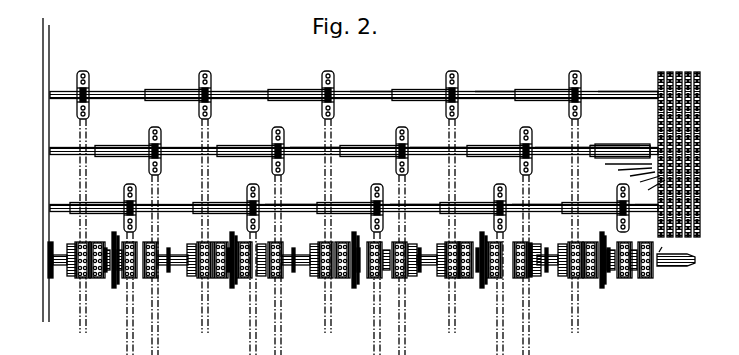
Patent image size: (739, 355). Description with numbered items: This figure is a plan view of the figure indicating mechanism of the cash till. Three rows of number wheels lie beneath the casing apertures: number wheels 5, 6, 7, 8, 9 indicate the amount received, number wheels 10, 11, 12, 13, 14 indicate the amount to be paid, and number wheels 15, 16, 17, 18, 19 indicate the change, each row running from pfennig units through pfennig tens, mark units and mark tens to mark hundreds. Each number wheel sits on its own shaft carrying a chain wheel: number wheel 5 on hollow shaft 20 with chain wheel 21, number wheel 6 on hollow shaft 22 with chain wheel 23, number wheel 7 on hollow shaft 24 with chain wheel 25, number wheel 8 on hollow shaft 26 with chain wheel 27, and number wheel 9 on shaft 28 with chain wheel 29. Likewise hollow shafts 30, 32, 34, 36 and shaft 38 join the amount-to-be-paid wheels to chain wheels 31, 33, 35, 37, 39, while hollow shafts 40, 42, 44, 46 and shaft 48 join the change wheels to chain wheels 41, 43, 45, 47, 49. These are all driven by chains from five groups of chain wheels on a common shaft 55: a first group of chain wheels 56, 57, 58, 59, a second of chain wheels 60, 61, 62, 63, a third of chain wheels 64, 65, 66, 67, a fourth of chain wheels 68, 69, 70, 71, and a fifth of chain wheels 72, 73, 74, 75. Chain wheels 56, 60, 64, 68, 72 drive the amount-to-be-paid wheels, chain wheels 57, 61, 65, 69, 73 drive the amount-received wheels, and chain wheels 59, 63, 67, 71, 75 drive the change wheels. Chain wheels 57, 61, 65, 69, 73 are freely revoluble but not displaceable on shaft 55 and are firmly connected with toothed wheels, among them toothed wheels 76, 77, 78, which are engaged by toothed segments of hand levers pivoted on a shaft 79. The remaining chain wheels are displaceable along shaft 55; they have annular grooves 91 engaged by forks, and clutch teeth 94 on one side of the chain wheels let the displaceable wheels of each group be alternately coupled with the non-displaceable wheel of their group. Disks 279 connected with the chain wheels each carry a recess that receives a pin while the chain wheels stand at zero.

The number wheel 5 is at (661, 245).
The number wheel 6 is at (670, 245).
The number wheel 7 is at (679, 245).
The number wheel 8 is at (688, 245).
The number wheel 9 is at (697, 245).
The number wheel 10 is at (649, 187).
The number wheel 11 is at (642, 180).
The number wheel 12 is at (632, 178).
The number wheel 13 is at (624, 172).
The number wheel 14 is at (618, 168).
The number wheel 15 is at (658, 75).
The number wheel 16 is at (668, 73).
The number wheel 17 is at (678, 72).
The number wheel 18 is at (687, 72).
The number wheel 19 is at (696, 72).
The hollow shaft 20 is at (620, 221).
The chain wheel 21 is at (621, 231).
The hollow shaft 22 is at (551, 204).
The chain wheel 23 is at (495, 192).
The hollow shaft 24 is at (420, 204).
The chain wheel 25 is at (372, 192).
The hollow shaft 26 is at (293, 204).
The chain wheel 27 is at (248, 190).
The shaft 28 is at (174, 204).
The chain wheel 29 is at (125, 192).
The hollow shaft 30 is at (598, 146).
The chain wheel 31 is at (645, 140).
The hollow shaft 32 is at (553, 147).
The chain wheel 33 is at (521, 136).
The hollow shaft 34 is at (430, 147).
The chain wheel 35 is at (398, 136).
The hollow shaft 36 is at (311, 147).
The chain wheel 37 is at (283, 133).
The shaft 38 is at (182, 147).
The chain wheel 39 is at (150, 136).
The hollow shaft 40 is at (616, 91).
The chain wheel 41 is at (579, 80).
The hollow shaft 42 is at (493, 91).
The chain wheel 43 is at (456, 80).
The hollow shaft 44 is at (370, 91).
The chain wheel 45 is at (333, 81).
The hollow shaft 46 is at (248, 91).
The chain wheel 47 is at (210, 80).
The shaft 48 is at (118, 91).
The chain wheel 49 is at (87, 78).
The shaft 55 is at (550, 266).
The chain wheel 56 is at (648, 278).
The chain wheel 57 is at (623, 278).
The chain wheel 58 is at (590, 278).
The chain wheel 59 is at (574, 278).
The chain wheel 60 is at (529, 278).
The chain wheel 61 is at (494, 278).
The chain wheel 62 is at (466, 278).
The chain wheel 63 is at (450, 278).
The chain wheel 64 is at (400, 278).
The chain wheel 65 is at (374, 278).
The chain wheel 66 is at (342, 278).
The chain wheel 67 is at (320, 278).
The chain wheel 68 is at (274, 278).
The chain wheel 69 is at (243, 278).
The chain wheel 70 is at (220, 278).
The chain wheel 71 is at (200, 278).
The chain wheel 72 is at (151, 278).
The chain wheel 73 is at (130, 278).
The chain wheel 74 is at (97, 278).
The chain wheel 75 is at (80, 278).
The toothed wheel 76 is at (386, 272).
The toothed wheel 77 is at (260, 276).
The toothed wheel 78 is at (120, 272).
The shaft 79 is at (633, 272).
The annular grooves 91 is at (388, 259).
The clutch teeth 94 is at (358, 274).
The disk 279 is at (117, 285).